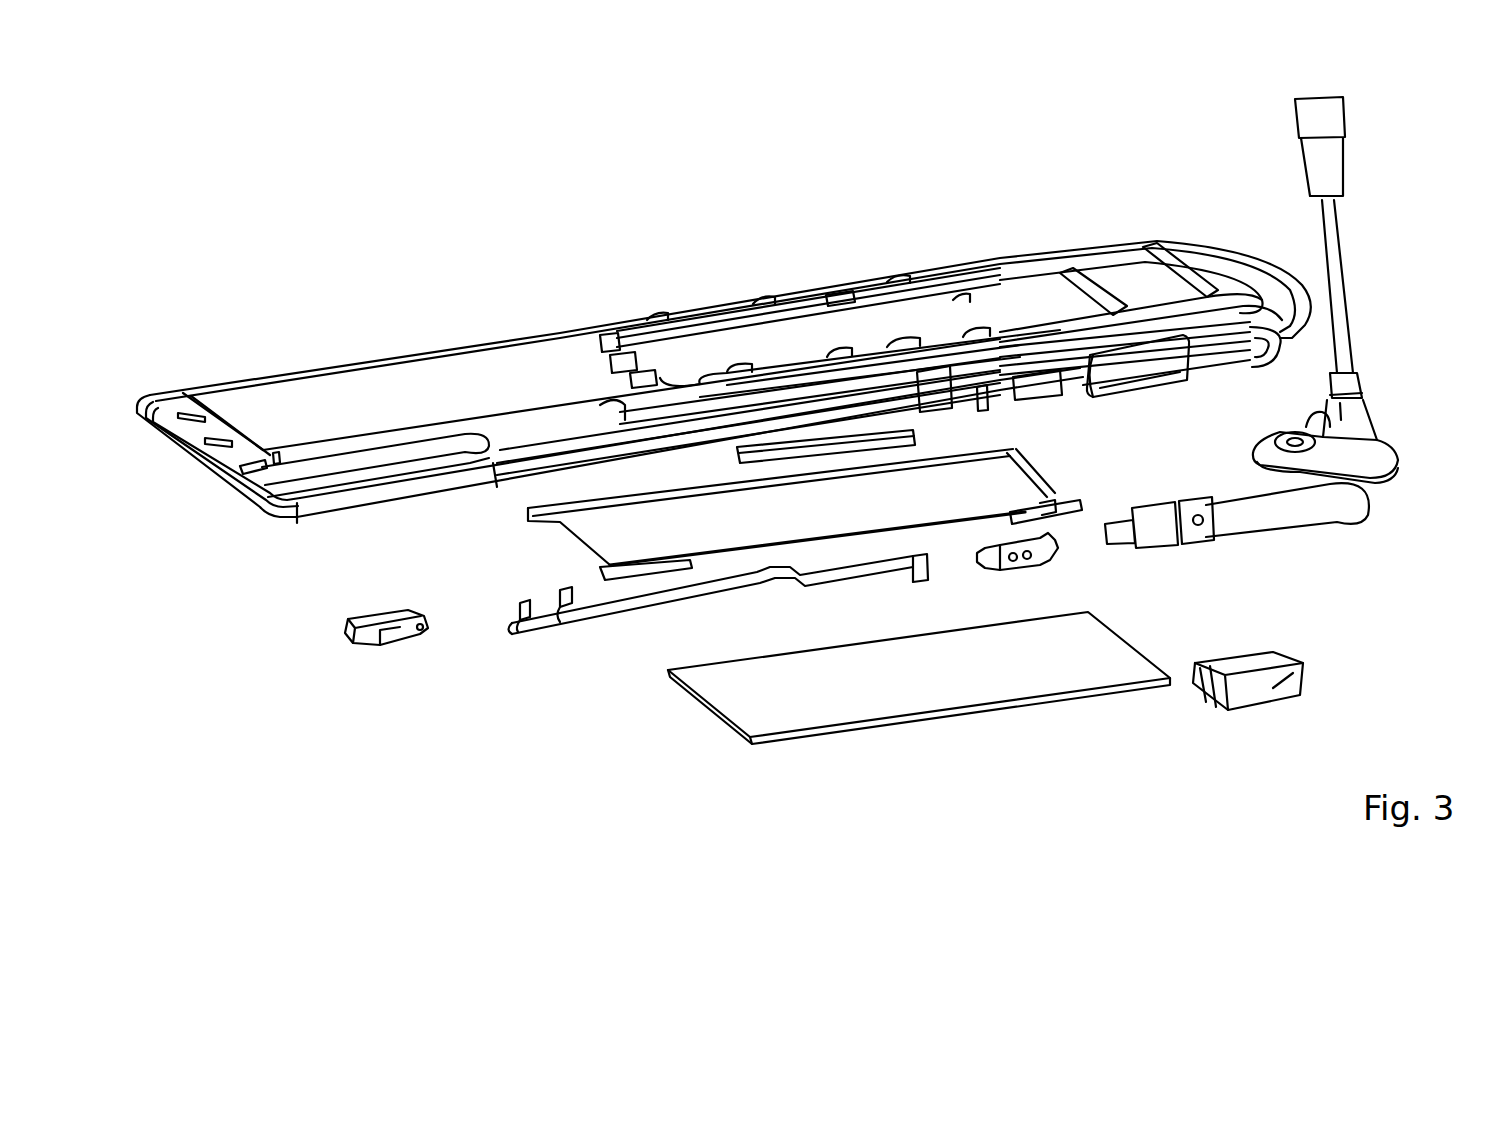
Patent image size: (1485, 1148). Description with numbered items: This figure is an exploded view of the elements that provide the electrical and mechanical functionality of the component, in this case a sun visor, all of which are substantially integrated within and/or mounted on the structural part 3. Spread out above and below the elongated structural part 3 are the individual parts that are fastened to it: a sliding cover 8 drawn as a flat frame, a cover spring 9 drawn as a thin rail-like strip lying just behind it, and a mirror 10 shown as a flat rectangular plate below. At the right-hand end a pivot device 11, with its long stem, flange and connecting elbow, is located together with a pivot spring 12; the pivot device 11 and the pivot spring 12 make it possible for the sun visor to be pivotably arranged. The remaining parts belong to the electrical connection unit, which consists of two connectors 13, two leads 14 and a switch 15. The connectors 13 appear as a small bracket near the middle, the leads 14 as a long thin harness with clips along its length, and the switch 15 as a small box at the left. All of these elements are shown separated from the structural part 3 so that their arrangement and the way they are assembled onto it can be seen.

The structural part 3 is at (440, 385).
The sliding cover 8 is at (840, 519).
The cover spring 9 is at (917, 427).
The mirror 10 is at (956, 685).
The pivot device 11 is at (1310, 505).
The pivot spring 12 is at (1305, 672).
The connectors 13 is at (1047, 563).
The leads 14 is at (583, 650).
The switch 15 is at (350, 628).